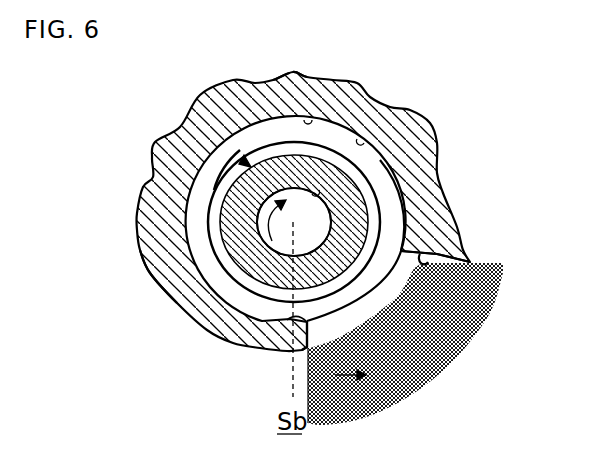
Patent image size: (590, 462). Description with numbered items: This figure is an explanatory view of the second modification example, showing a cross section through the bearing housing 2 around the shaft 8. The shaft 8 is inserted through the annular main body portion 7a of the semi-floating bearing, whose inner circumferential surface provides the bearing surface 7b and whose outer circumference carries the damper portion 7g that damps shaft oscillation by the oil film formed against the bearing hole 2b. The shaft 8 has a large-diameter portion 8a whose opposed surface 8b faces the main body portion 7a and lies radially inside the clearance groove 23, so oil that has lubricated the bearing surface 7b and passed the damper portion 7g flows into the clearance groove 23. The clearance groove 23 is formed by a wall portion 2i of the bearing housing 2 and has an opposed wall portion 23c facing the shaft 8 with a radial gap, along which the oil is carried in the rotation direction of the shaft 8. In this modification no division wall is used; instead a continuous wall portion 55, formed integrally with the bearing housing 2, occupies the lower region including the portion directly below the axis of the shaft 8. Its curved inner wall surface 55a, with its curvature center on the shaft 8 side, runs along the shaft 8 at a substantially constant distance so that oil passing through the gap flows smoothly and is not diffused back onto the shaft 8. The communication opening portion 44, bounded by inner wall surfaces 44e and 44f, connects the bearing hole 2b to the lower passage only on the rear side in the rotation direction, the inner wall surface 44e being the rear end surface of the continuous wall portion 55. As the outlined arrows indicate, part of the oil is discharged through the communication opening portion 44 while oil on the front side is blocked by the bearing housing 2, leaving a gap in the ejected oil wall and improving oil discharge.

The bearing housing 2 is at (235, 93).
The bearing hole 2b is at (305, 117).
The wall portion 2i is at (168, 280).
The main body portion 7a is at (243, 162).
The bearing surface 7b is at (337, 193).
The damper portion 7g is at (367, 190).
The shaft 8 is at (301, 218).
The large-diameter portion 8a is at (233, 165).
The opposed surface 8b is at (215, 191).
The clearance groove 23 is at (197, 245).
The opposed wall portion 23c is at (322, 191).
The communication opening portion 44 is at (395, 290).
The inner wall surface 44e is at (298, 357).
The inner wall surface 44f is at (443, 252).
The continuous wall portion 55 is at (290, 349).
The inner wall surface 55a is at (221, 344).